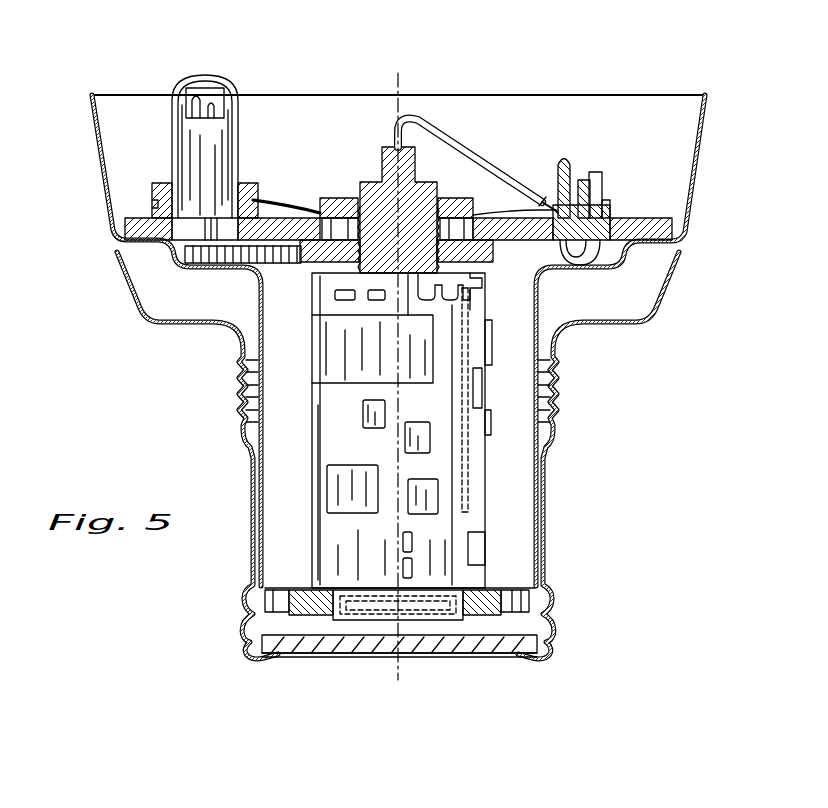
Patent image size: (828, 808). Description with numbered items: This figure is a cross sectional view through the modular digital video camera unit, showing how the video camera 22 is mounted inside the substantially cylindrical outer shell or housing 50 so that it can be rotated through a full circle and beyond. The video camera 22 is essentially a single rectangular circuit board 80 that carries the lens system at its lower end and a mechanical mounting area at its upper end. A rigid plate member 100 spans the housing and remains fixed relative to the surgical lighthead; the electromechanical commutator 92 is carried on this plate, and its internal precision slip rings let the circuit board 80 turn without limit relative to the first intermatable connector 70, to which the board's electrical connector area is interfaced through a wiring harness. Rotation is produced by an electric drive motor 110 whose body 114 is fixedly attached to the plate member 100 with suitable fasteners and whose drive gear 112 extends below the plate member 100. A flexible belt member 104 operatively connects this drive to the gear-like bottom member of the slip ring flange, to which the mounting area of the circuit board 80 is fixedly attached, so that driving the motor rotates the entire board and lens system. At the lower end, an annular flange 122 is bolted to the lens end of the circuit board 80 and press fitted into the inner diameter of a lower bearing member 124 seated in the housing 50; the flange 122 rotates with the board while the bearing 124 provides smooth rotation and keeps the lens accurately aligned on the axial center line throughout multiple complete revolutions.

The video camera 22 is at (311, 440).
The outer shell or housing 50 is at (540, 303).
The first intermatable connector 70 is at (613, 165).
The circuit board 80 is at (472, 467).
The electromechanical commutator 92 is at (374, 181).
The rigid plate member 100 is at (670, 253).
The flexible belt member 104 is at (240, 262).
The electric drive motor 110 is at (236, 140).
The drive gear 112 is at (197, 272).
The body of the gear motor 114 is at (172, 130).
The annular flange 122 is at (495, 590).
The bearing member 124 is at (522, 602).